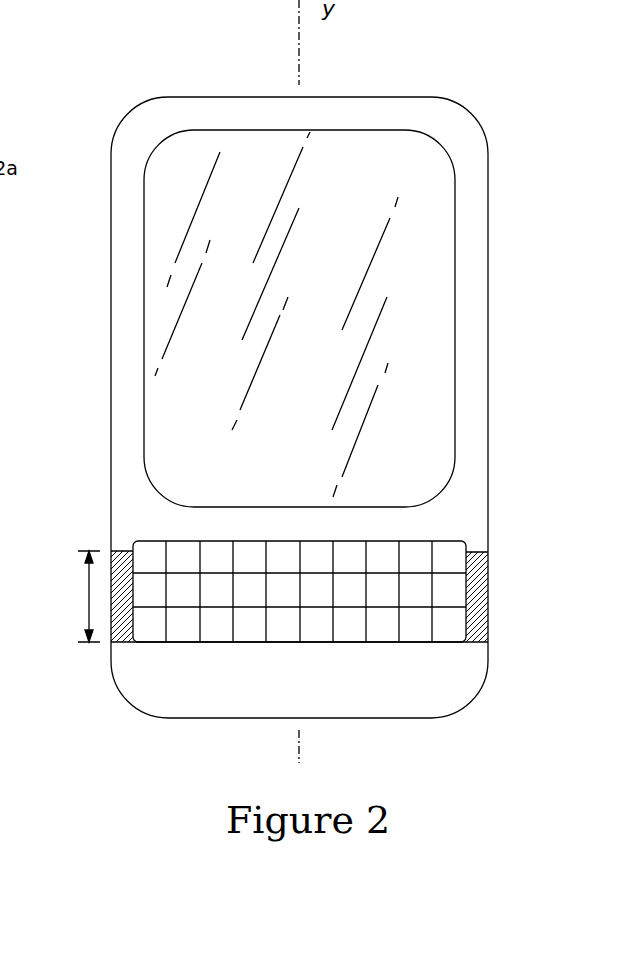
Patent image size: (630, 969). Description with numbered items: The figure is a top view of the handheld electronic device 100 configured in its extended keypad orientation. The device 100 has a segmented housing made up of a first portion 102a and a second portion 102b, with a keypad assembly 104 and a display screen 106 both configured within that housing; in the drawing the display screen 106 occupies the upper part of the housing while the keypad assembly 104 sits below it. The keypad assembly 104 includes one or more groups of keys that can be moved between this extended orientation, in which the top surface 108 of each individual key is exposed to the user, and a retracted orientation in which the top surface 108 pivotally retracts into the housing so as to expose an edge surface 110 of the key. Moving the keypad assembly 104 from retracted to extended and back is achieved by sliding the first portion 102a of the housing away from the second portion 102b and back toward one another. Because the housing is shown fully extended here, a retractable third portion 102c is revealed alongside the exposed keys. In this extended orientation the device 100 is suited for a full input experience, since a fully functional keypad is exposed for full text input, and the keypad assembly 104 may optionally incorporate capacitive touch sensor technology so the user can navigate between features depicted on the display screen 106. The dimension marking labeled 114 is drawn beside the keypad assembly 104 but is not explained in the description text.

The handheld electronic device 100 is at (93, 61).
The first portion 102a is at (480, 185).
The second portion 102b is at (465, 687).
The retractable third portion 102c is at (475, 627).
The keypad assembly 104 is at (511, 538).
The display screen 106 is at (167, 223).
The top surface 108 is at (448, 553).
The edge surface 110 is at (13, 466).
The keyboard height 114 is at (50, 592).